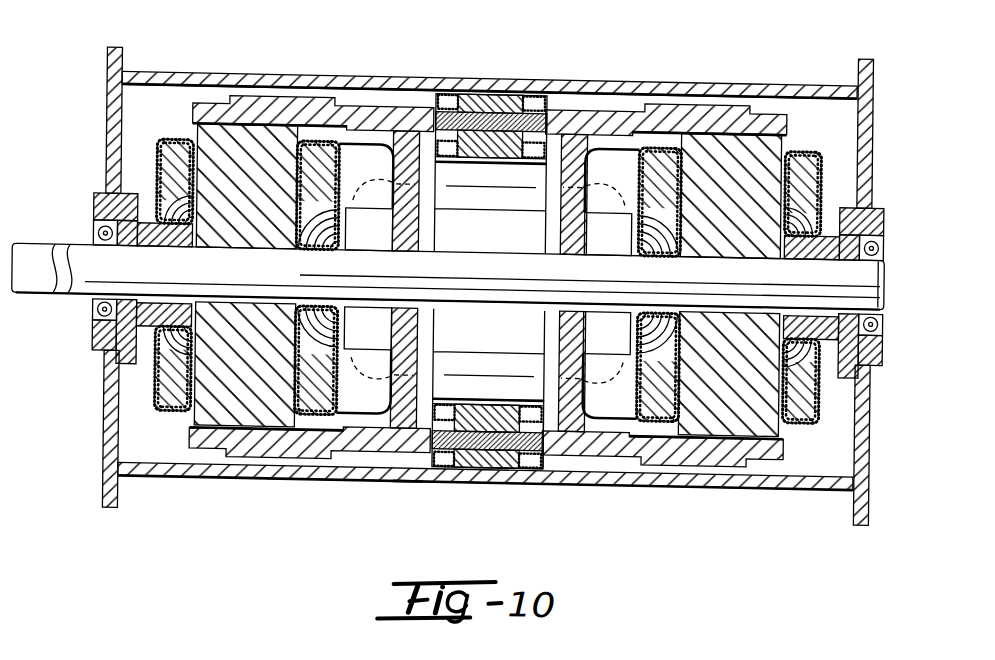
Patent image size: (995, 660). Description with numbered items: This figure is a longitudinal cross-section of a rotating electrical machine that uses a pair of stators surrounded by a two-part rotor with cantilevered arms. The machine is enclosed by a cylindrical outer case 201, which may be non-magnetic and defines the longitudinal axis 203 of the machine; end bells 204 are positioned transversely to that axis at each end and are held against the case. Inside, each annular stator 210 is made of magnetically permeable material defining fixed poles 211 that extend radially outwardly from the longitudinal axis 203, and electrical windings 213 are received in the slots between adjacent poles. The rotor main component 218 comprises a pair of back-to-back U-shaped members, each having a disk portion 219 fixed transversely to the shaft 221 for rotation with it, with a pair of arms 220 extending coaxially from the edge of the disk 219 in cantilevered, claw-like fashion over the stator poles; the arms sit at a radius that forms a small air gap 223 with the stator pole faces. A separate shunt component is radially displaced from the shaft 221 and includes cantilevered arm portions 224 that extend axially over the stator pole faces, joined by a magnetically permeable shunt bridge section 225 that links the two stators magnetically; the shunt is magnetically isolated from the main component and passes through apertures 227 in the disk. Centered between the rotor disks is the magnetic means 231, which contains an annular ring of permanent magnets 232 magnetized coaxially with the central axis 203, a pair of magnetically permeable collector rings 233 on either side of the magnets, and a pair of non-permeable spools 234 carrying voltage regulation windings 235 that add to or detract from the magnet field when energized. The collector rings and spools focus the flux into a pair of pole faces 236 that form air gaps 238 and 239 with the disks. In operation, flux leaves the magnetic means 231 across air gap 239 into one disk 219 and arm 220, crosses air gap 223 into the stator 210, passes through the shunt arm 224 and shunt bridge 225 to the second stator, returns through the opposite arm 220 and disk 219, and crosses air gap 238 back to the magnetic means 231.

The cylindrical outer case 201 is at (672, 486).
The longitudinal axis 203 is at (896, 277).
The end bells 204 is at (113, 153).
The stator 210 is at (191, 133).
The fixed pole 211 is at (232, 148).
The electrical winding 213 is at (168, 184).
The main component 218 is at (206, 81).
The disk portion 219 is at (405, 300).
The arm 220 is at (268, 111).
The shaft 221 is at (93, 240).
The air gap 223 is at (193, 129).
The cantilevered arm portion 224 is at (344, 236).
The shunt bridge section 225 is at (528, 240).
The aperture 227 is at (488, 281).
The magnetic means 231 is at (545, 80).
The permanent magnets 232 is at (516, 115).
The collector ring 233 is at (521, 112).
The spool 234 is at (468, 116).
The voltage regulation winding 235 is at (445, 98).
The pole face 236 is at (537, 469).
The air gap 238 is at (545, 469).
The air gap 239 is at (410, 481).